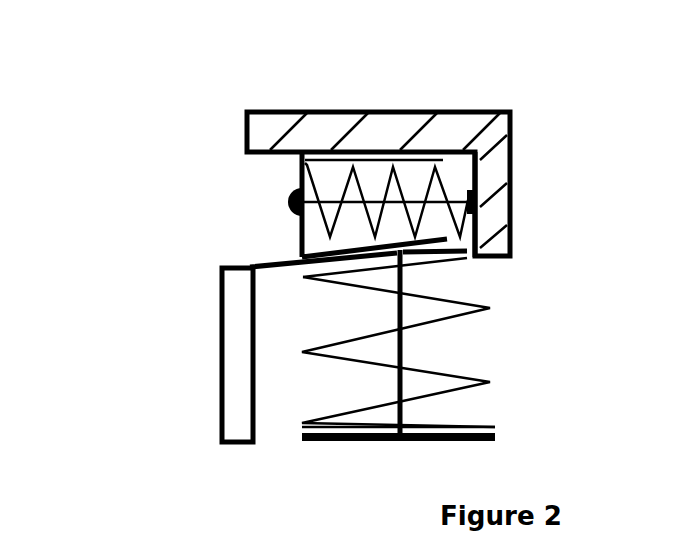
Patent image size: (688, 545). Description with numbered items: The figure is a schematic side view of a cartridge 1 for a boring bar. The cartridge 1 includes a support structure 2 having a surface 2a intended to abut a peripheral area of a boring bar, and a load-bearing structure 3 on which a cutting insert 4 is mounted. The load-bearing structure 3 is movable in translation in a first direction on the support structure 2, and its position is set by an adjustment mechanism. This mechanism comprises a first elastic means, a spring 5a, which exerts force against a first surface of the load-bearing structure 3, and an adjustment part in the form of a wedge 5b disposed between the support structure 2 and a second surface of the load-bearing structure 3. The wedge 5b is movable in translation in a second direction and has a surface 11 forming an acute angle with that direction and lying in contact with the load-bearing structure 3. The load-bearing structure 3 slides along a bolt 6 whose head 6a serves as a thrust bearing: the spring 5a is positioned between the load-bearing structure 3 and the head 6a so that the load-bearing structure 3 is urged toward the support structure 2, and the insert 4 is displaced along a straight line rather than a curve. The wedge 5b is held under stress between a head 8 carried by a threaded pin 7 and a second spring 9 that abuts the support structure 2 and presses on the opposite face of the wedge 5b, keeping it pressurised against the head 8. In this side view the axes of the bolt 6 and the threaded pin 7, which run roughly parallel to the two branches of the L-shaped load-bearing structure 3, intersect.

The cartridge 1 is at (525, 182).
The support structure 2 is at (402, 120).
The surface 2a is at (437, 113).
The load-bearing structure 3 is at (265, 268).
The cutting insert 4 is at (233, 375).
The spring 5a is at (478, 385).
The wedge 5b is at (300, 228).
The bolt 6 is at (405, 337).
The head 6a is at (365, 442).
The threaded pin 7 is at (457, 200).
The head 8 is at (292, 197).
The spring 9 is at (338, 200).
The surface 11 is at (445, 263).